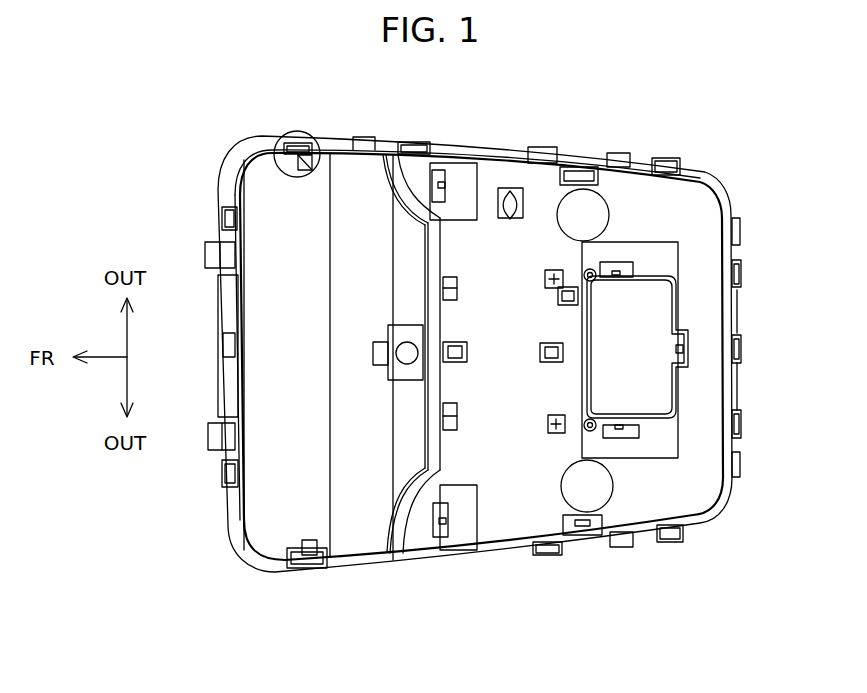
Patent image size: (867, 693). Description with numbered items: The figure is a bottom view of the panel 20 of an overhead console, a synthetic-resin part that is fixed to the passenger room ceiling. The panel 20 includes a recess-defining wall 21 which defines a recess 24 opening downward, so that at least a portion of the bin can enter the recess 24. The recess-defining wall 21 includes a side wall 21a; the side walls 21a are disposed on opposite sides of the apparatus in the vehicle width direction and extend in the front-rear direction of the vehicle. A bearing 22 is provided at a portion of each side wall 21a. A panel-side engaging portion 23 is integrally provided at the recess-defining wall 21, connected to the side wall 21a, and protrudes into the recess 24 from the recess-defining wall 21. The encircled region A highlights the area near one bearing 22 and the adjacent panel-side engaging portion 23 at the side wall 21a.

The panel 20 is at (722, 176).
The recess-defining wall 21 is at (250, 536).
The side wall 21a is at (355, 147).
The bearing 22 is at (297, 140).
The panel-side engaging portion 23 is at (305, 172).
The recess 24 is at (285, 399).
The detail region A is at (283, 170).